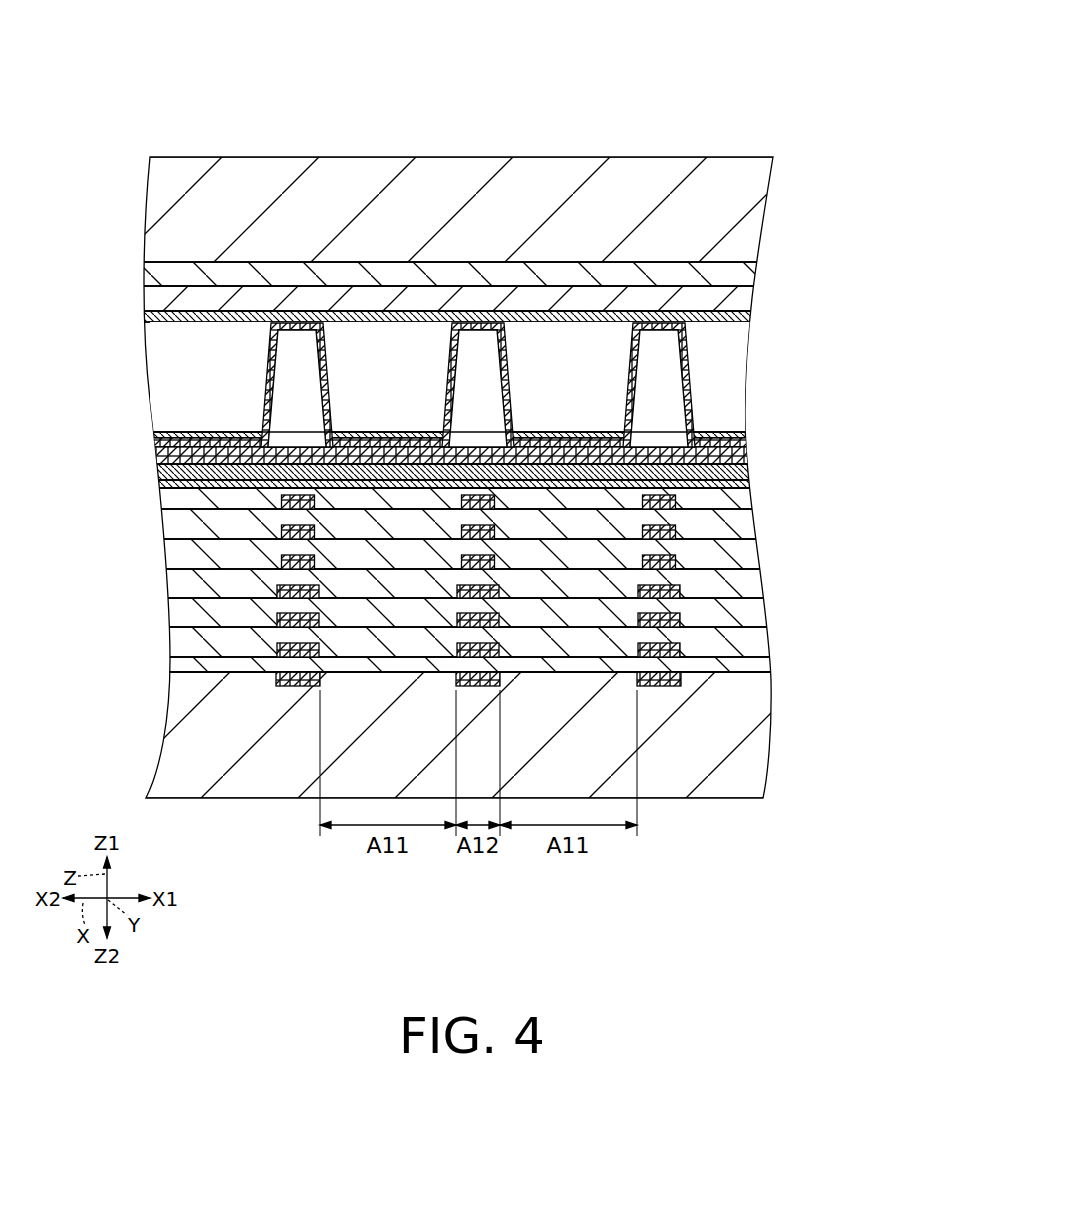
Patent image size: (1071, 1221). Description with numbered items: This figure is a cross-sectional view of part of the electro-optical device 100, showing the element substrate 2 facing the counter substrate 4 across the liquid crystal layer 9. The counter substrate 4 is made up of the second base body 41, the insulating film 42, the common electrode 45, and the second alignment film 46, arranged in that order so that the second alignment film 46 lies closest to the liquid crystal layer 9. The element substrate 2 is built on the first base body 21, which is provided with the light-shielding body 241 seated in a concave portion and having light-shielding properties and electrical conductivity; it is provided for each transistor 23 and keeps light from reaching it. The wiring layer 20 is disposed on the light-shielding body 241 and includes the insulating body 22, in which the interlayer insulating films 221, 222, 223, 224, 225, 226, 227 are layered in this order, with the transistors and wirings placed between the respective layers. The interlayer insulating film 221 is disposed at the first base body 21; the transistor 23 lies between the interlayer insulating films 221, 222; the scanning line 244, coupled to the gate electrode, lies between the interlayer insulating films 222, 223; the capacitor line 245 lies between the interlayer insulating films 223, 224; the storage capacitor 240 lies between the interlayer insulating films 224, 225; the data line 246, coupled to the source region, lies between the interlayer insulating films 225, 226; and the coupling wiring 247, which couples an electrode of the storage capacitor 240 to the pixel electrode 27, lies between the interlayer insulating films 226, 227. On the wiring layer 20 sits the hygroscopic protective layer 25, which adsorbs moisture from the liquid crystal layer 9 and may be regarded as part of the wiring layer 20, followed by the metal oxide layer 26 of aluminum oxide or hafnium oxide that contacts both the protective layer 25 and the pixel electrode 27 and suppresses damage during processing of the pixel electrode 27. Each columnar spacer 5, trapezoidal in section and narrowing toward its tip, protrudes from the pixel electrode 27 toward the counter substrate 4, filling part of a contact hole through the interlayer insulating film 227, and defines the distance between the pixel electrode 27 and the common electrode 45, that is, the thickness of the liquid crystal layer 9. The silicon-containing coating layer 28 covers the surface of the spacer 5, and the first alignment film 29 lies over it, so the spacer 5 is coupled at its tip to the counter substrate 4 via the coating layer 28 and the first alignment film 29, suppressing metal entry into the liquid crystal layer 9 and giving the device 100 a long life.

The electro-optical device 100 is at (729, 79).
The counter substrate 4 is at (805, 200).
The second base body 41 is at (715, 218).
The insulating film 42 is at (715, 271).
The common electrode 45 is at (715, 298).
The second alignment film 46 is at (715, 318).
The liquid crystal layer 9 is at (730, 383).
The spacer 5 is at (292, 402).
The first alignment film 29 is at (748, 437).
The coating layer 28 is at (748, 446).
The pixel electrode 27 is at (748, 456).
The metal oxide layer 26 is at (748, 468).
The protective layer 25 is at (748, 482).
The element substrate 2 is at (879, 388).
The insulating body 22 is at (79, 485).
The interlayer insulating film 227 is at (180, 497).
The interlayer insulating film 226 is at (181, 530).
The interlayer insulating film 225 is at (182, 561).
The interlayer insulating film 224 is at (183, 594).
The interlayer insulating film 223 is at (183, 625).
The interlayer insulating film 222 is at (183, 655).
The interlayer insulating film 221 is at (180, 676).
The first base body 21 is at (730, 738).
The wiring layer 20 is at (828, 503).
The coupling wiring 247 is at (700, 504).
The data line 246 is at (700, 534).
The storage capacitor 240 is at (700, 563).
The capacitor line 245 is at (700, 594).
The scanning line 244 is at (700, 622).
The transistor 23 is at (700, 652).
The light-shielding body 241 is at (700, 680).